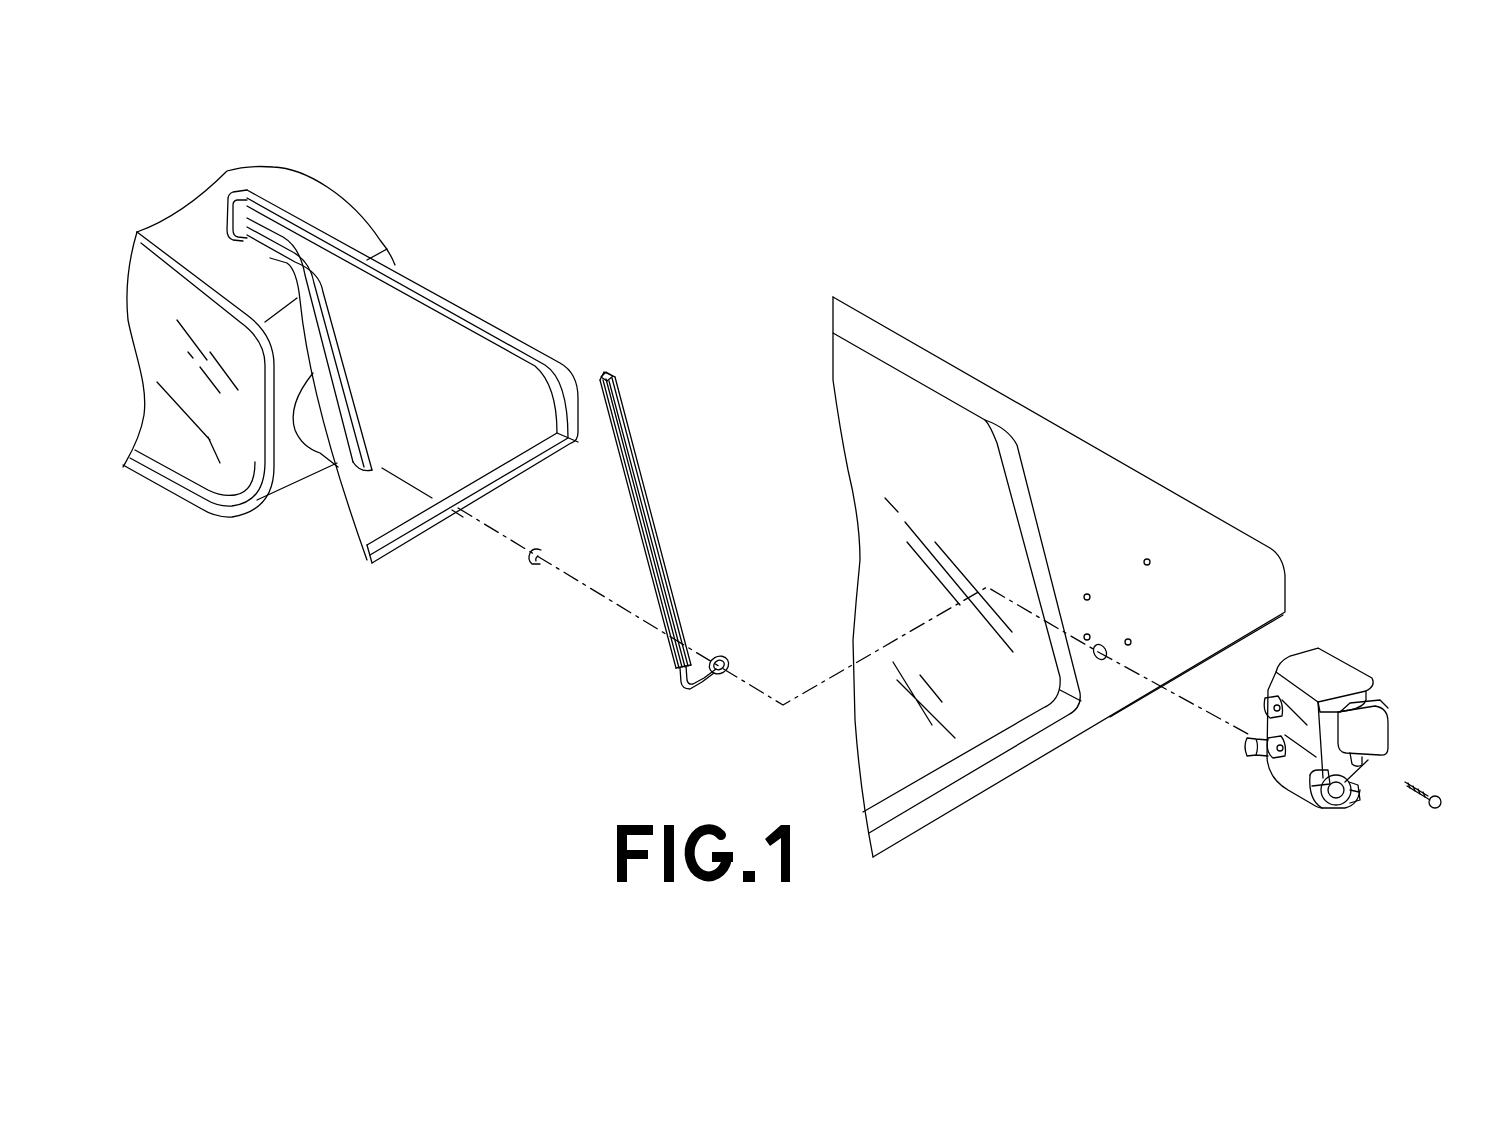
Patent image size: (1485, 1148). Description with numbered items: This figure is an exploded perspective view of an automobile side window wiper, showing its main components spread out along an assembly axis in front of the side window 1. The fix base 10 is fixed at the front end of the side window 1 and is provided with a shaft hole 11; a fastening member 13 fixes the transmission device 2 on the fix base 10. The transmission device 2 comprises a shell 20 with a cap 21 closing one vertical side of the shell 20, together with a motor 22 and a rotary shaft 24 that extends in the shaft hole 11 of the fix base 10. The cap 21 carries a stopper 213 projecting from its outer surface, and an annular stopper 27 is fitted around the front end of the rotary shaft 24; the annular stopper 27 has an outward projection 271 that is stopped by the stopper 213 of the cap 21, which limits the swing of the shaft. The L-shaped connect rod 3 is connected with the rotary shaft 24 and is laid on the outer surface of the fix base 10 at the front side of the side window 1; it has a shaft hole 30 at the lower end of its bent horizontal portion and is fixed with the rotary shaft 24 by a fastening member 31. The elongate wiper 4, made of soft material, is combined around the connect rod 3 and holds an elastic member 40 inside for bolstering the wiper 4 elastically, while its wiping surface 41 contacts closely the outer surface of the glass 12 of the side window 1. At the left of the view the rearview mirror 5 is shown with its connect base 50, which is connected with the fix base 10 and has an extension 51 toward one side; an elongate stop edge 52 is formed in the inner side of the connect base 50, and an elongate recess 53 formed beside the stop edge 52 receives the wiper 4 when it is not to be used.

The side window 1 is at (1097, 447).
The fix base 10 is at (1172, 522).
The shaft hole 11 is at (1103, 661).
The glass 12 is at (1003, 695).
The fastening member 13 is at (1420, 806).
The transmission device 2 is at (1363, 659).
The shell 20 is at (1327, 660).
The cap 21 is at (1368, 695).
The motor 22 is at (1382, 737).
The rotary shaft 24 is at (1258, 760).
The annular stopper 27 is at (1330, 808).
The outward projection 271 is at (1320, 778).
The stopper 213 is at (1342, 806).
The connect rod 3 is at (703, 688).
The shaft hole 30 is at (727, 678).
The fastening member 31 is at (527, 572).
The wiper 4 is at (630, 507).
The elastic member 40 is at (607, 375).
The wiping surface 41 is at (655, 527).
The rearview mirror 5 is at (318, 212).
The connect base 50 is at (480, 327).
The extension 51 is at (218, 232).
The stop edge 52 is at (350, 383).
The recess 53 is at (327, 400).